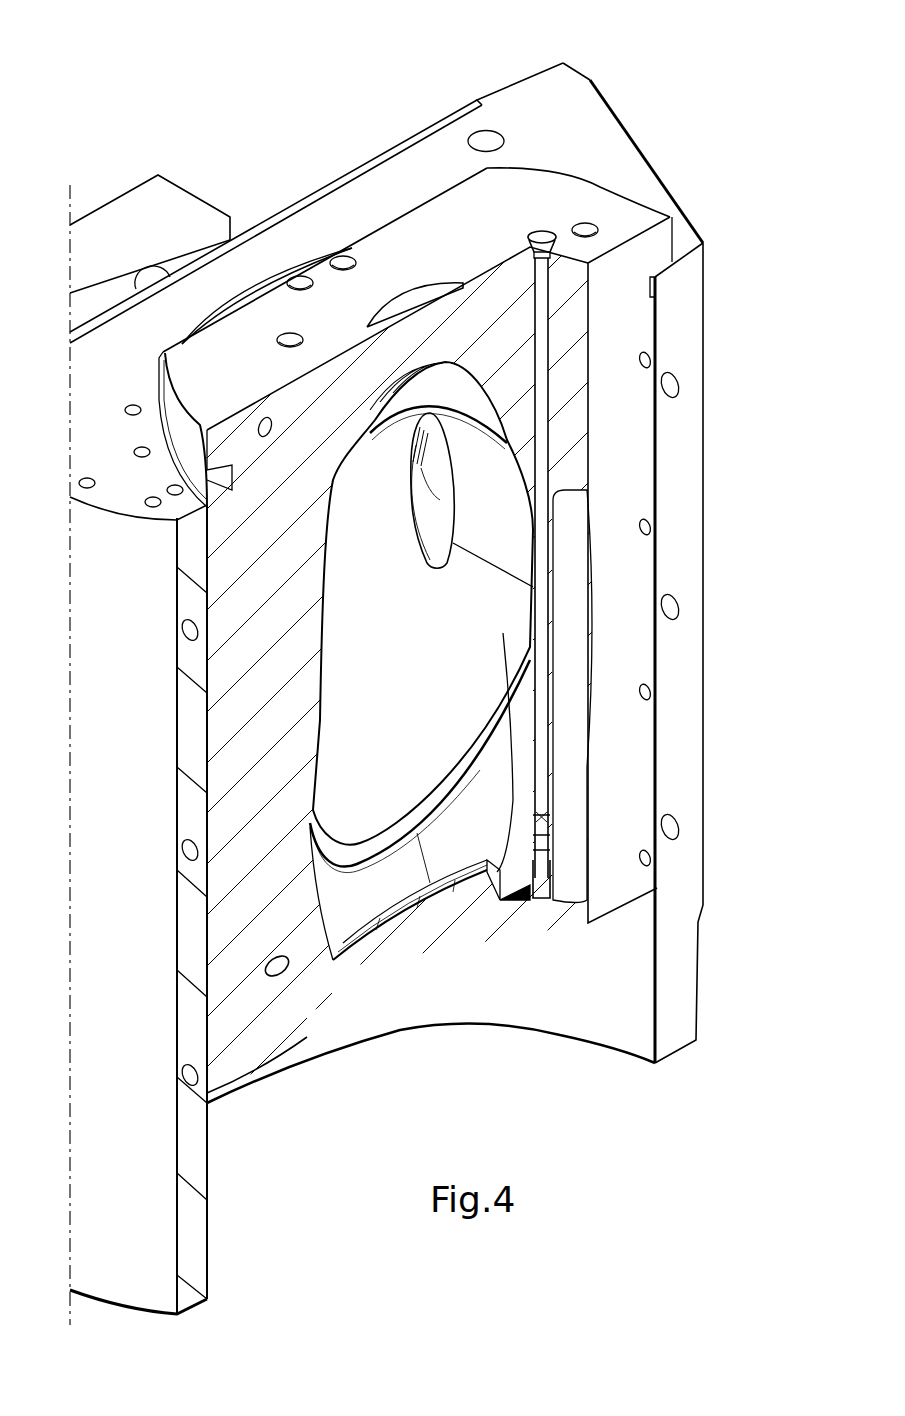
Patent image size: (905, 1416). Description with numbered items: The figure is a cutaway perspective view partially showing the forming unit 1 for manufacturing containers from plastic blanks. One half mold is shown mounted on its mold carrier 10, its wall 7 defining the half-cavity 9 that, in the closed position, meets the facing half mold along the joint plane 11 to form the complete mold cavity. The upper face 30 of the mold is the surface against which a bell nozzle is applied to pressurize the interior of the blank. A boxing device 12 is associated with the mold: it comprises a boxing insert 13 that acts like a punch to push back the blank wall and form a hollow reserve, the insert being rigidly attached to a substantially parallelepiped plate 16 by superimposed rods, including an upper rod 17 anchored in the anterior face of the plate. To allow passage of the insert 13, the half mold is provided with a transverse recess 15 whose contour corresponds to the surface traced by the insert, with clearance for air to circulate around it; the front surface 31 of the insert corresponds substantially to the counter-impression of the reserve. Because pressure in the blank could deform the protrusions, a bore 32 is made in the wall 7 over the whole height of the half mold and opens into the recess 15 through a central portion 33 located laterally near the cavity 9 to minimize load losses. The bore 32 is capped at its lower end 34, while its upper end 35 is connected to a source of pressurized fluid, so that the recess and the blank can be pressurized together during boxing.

The forming unit 1 is at (290, 60).
The wall 7 is at (642, 215).
The half-cavity 9 is at (405, 683).
The mold carrier 10 is at (615, 105).
The joint plane 11 is at (640, 418).
The boxing device 12 is at (178, 156).
The boxing insert 13 is at (418, 527).
The recess 15 is at (450, 588).
The plate 16 is at (128, 214).
The upper rod 17 is at (158, 276).
The upper face 30 is at (415, 236).
The front surface 31 is at (437, 494).
The bore 32 is at (563, 348).
The central portion 33 is at (540, 560).
The lower end 34 is at (545, 905).
The upper end 35 is at (536, 237).